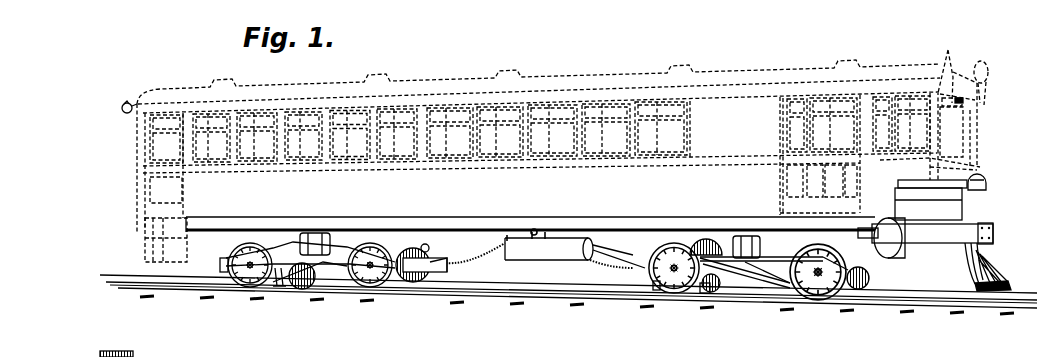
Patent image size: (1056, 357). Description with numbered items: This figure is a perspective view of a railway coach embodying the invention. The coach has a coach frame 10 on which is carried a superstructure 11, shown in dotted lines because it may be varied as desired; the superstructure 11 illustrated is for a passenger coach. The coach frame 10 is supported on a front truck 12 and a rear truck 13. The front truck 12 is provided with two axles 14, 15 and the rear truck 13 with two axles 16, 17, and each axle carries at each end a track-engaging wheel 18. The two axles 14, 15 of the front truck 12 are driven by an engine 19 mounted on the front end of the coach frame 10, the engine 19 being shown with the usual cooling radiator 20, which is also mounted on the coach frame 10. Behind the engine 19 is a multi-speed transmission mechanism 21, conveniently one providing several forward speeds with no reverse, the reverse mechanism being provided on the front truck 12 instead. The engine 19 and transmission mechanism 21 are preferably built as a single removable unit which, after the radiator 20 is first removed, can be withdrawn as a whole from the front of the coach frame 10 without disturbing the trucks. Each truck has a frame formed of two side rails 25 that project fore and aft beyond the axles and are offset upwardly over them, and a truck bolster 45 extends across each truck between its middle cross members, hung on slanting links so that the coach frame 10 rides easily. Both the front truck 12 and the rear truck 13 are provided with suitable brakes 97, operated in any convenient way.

The coach frame 10 is at (578, 222).
The superstructure 11 is at (601, 80).
The front truck 12 is at (779, 270).
The rear truck 13 is at (340, 258).
The axle 14 is at (819, 276).
The axle 15 is at (674, 272).
The axle 16 is at (370, 278).
The axle 17 is at (250, 278).
The track-engaging wheel 18 is at (222, 273).
The engine 19 is at (940, 198).
The cooling radiator 20 is at (988, 212).
The multi-speed transmission mechanism 21 is at (856, 229).
The side rail 25 is at (432, 236).
The truck bolster 45 is at (318, 233).
The brake 97 is at (278, 288).